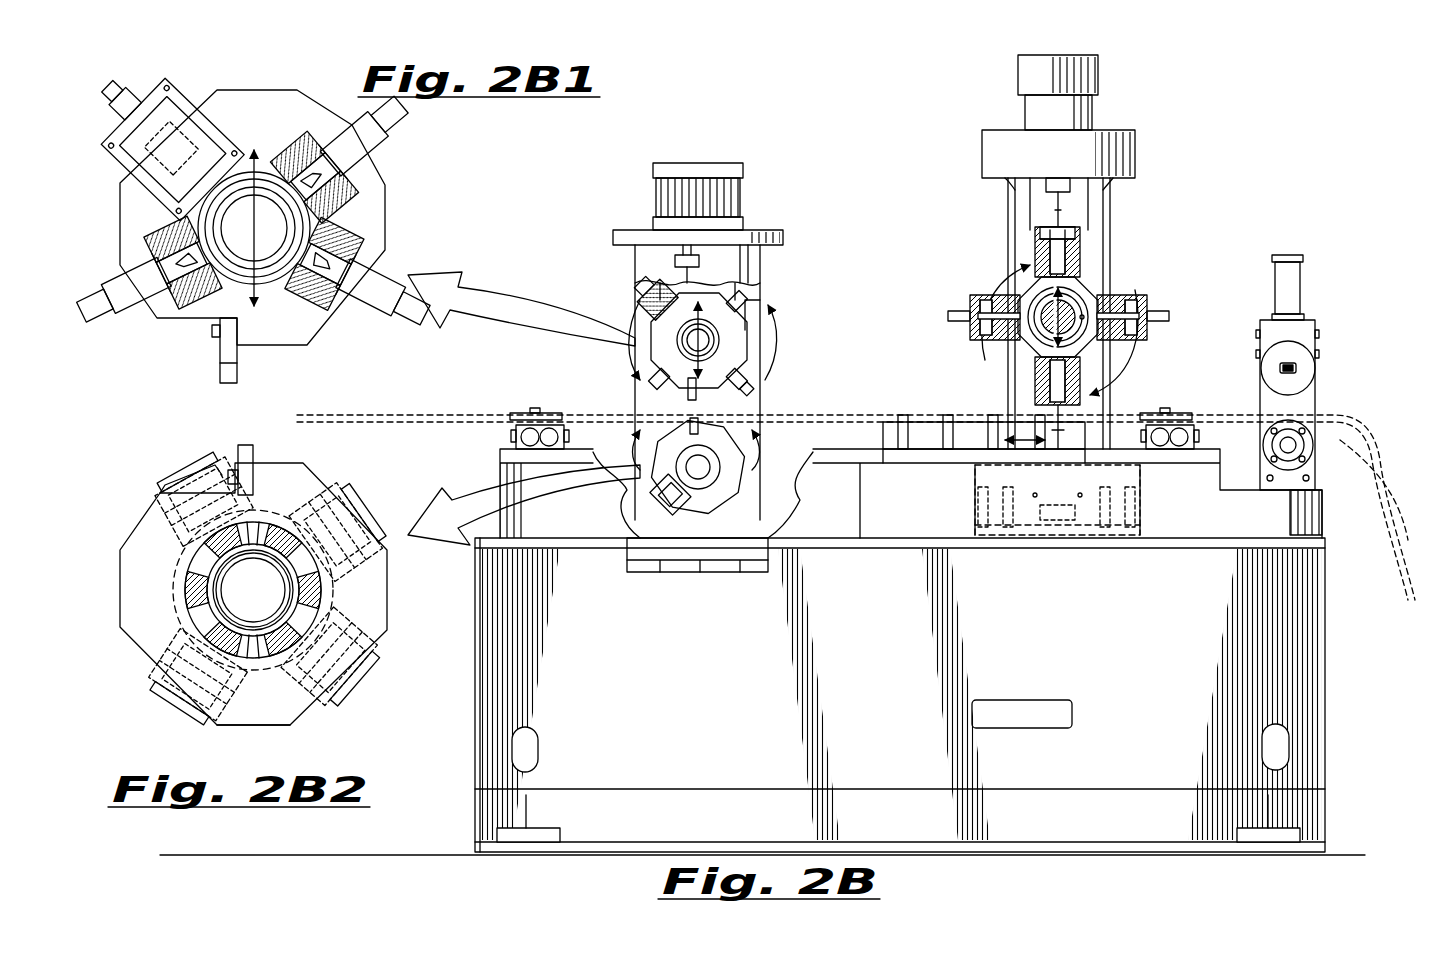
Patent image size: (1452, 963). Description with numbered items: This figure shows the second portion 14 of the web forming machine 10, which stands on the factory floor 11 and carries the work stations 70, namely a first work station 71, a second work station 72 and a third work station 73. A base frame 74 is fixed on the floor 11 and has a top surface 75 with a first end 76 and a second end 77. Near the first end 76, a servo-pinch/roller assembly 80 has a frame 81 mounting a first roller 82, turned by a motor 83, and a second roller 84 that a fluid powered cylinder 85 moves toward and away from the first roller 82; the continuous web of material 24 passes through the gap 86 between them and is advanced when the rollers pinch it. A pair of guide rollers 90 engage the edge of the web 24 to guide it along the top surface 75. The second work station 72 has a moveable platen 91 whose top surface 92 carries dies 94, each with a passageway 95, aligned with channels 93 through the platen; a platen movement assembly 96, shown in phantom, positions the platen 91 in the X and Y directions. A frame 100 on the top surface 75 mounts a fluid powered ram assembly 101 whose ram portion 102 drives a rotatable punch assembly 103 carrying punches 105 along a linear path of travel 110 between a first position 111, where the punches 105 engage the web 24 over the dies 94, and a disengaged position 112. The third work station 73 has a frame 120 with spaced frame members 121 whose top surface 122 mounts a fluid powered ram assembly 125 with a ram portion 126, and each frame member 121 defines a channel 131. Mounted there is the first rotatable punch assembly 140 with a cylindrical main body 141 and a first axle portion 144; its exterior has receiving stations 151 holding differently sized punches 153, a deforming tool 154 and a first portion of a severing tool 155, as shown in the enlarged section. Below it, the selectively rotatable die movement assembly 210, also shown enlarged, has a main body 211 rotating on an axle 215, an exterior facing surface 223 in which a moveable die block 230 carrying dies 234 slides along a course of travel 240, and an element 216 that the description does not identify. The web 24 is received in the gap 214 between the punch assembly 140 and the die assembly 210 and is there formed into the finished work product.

In FIG. 2B, the web forming machine 10 is at (1228, 108).
In FIG. 2B, the factory floor 11 is at (378, 855).
In FIG. 2B, the second portion 14 is at (815, 162).
In FIG. 2B, the continuous web of material 24 is at (1410, 574).
In FIG. 2B, the work stations 70 is at (707, 142).
In FIG. 2B, the first work station 71 is at (1318, 320).
In FIG. 2B, the second work station 72 is at (1138, 152).
In FIG. 2B, the third work station 73 is at (592, 202).
In FIG. 2B, the base frame 74 is at (1152, 683).
In FIG. 2B, the top surface 75 is at (1212, 449).
In FIG. 2B, the first end 76 is at (1295, 712).
In FIG. 2B, the second end 77 is at (500, 707).
In FIG. 2B, the servo-pinch/roller assembly 80 is at (1300, 374).
In FIG. 2B, the frame 81 is at (1308, 402).
In FIG. 2B, the first roller 82 is at (1310, 447).
In FIG. 2B, the motor 83 is at (1280, 467).
In FIG. 2B, the second roller 84 is at (1290, 347).
In FIG. 2B, the fluid powered cylinder 85 is at (1278, 282).
In FIG. 2B, the gap 86 is at (1305, 410).
In FIG. 2B, the guide rollers 90 is at (518, 412).
In FIG. 2B, the moveable platen 91 is at (878, 422).
In FIG. 2B, the top surface 92 is at (905, 418).
In FIG. 2B, the channels or passageways 93 is at (945, 440).
In FIG. 2B, the dies 94 is at (990, 418).
In FIG. 2B, the passageway 95 is at (995, 440).
In FIG. 2B, the platen movement assembly 96 is at (1060, 535).
In FIG. 2B, the frame 100 is at (1074, 252).
In FIG. 2B, the fluid powered ram assembly 101 is at (1070, 122).
In FIG. 2B, the ram portion 102 is at (1050, 203).
In FIG. 2B, the rotatable punch assembly 103 is at (1100, 257).
In FIG. 2B, the punches 105 is at (963, 312).
In FIG. 2B, the linear path of travel 110 is at (1068, 312).
In FIG. 2B, the first position 111 is at (1035, 367).
In FIG. 2B, the disengaged position 112 is at (1030, 234).
In FIG. 2B, the frame 120 is at (600, 292).
In FIG. 2B, the frame members 121 is at (768, 294).
In FIG. 2B, the top surface 122 is at (770, 242).
In FIG. 2B, the fluid powered ram assembly 125 is at (742, 192).
In FIG. 2B, the ram portion 126 is at (672, 262).
In FIG. 2B, the longitudinally extending channel 131 is at (672, 264).
In FIG. 2B1, the first rotatable punch assembly 140 is at (105, 168).
In FIG. 2B, the first rotatable punch assembly 140 is at (662, 378).
In FIG. 2B1, the main body 141 is at (298, 90).
In FIG. 2B1, the first axle portion 144 is at (266, 240).
In FIG. 2B1, the receiving stations 151 is at (342, 175).
In FIG. 2B1, the punches 153 is at (142, 100).
In FIG. 2B, the punches 153 is at (750, 374).
In FIG. 2B1, the deforming tool 154 is at (372, 145).
In FIG. 2B1, the first portion of a severing tool 155 is at (238, 380).
In FIG. 2B, the first portion of a severing tool 155 is at (710, 400).
In FIG. 2B2, the selectively rotatable die movement assembly 210 is at (115, 528).
In FIG. 2B, the selectively rotatable die movement assembly 210 is at (710, 522).
In FIG. 2B2, the main body 211 is at (320, 504).
In FIG. 2B2, the gap 214 is at (208, 390).
In FIG. 2B2, the axle 215 is at (264, 598).
In FIG. 2B2, the rotor circle 216 is at (262, 517).
In FIG. 2B2, the exterior facing surface 223 is at (386, 617).
In FIG. 2B2, the moveable die block 230 is at (200, 715).
In FIG. 2B2, the dies 234 is at (372, 507).
In FIG. 2B1, the course of travel 240 is at (258, 222).